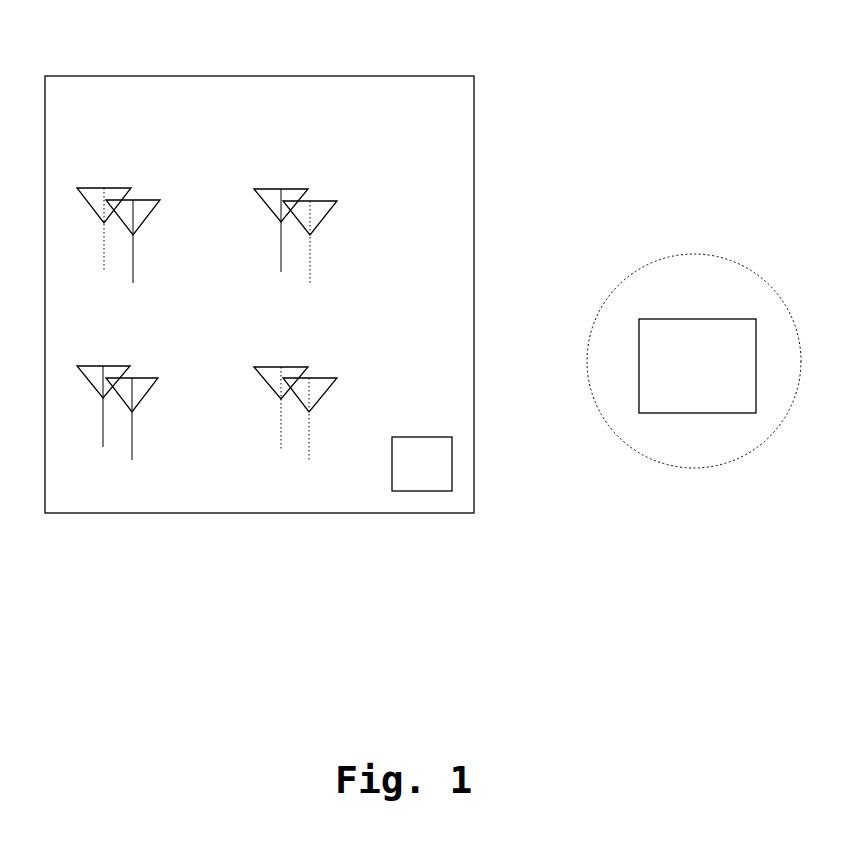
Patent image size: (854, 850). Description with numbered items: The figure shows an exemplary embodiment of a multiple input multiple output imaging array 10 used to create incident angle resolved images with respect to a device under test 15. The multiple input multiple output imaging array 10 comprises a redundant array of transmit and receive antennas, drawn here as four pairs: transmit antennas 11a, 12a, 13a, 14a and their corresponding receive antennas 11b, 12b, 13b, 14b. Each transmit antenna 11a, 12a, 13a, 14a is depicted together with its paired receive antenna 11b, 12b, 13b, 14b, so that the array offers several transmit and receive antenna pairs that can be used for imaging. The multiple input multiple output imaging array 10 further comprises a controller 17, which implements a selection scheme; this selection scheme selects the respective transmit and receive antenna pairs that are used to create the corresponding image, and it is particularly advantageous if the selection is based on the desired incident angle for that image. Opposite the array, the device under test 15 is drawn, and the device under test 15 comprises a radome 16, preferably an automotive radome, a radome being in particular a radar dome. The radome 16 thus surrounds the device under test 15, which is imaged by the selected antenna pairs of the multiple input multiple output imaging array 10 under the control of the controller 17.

The multiple input multiple output imaging array 10 is at (117, 76).
The transmit antenna 11a is at (140, 165).
The receive antenna 11b is at (148, 200).
The transmit antenna 12a is at (320, 164).
The receive antenna 12b is at (328, 201).
The transmit antenna 13a is at (140, 342).
The receive antenna 13b is at (148, 378).
The transmit antenna 14a is at (318, 342).
The receive antenna 14b is at (326, 378).
The device under test 15 is at (697, 319).
The radome 16 is at (698, 260).
The controller 17 is at (425, 437).